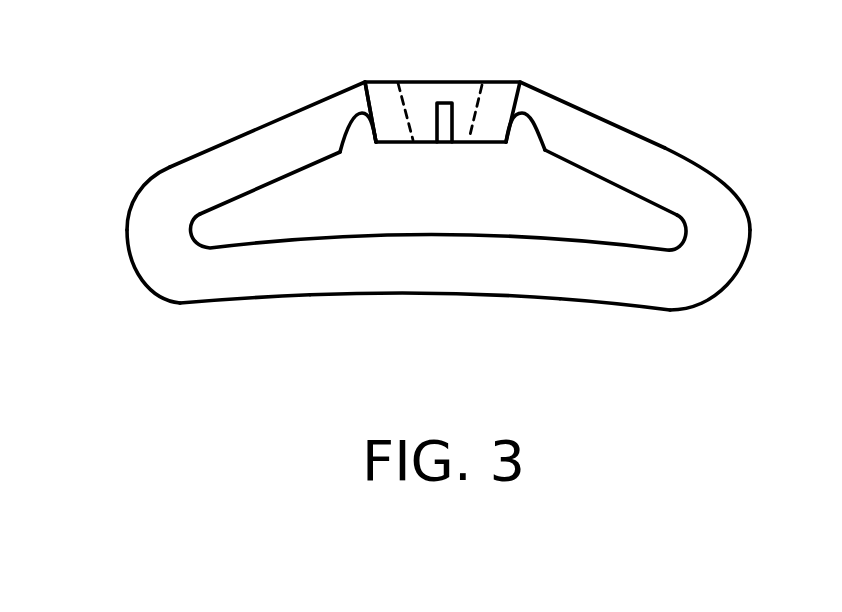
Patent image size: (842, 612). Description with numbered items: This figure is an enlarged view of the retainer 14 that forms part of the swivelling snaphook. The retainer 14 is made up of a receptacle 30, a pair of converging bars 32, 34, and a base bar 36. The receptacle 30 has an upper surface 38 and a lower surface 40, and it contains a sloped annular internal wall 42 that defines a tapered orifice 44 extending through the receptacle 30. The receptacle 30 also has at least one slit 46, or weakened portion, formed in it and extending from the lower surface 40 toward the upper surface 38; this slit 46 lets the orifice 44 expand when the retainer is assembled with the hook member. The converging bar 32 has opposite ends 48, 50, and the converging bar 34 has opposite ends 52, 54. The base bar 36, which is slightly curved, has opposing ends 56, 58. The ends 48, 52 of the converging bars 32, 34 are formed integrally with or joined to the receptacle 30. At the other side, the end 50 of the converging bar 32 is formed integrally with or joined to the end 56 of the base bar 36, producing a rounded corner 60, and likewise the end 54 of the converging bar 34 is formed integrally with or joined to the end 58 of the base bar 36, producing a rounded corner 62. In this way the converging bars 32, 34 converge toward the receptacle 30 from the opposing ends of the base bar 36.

The retainer 14 is at (663, 96).
The receptacle 30 is at (507, 92).
The converging bar 32 is at (247, 153).
The converging bar 34 is at (664, 160).
The base bar 36 is at (450, 277).
The upper surface 38 is at (378, 81).
The lower surface 40 is at (397, 143).
The sloped annular internal wall 42 is at (408, 108).
The tapered orifice 44 is at (463, 98).
The slit 46 is at (444, 142).
The end 48 is at (340, 114).
The end 50 is at (178, 176).
The end 52 is at (562, 102).
The end 54 is at (724, 200).
The end 56 is at (195, 283).
The end 58 is at (610, 283).
The rounded corner 60 is at (128, 252).
The rounded corner 62 is at (742, 262).